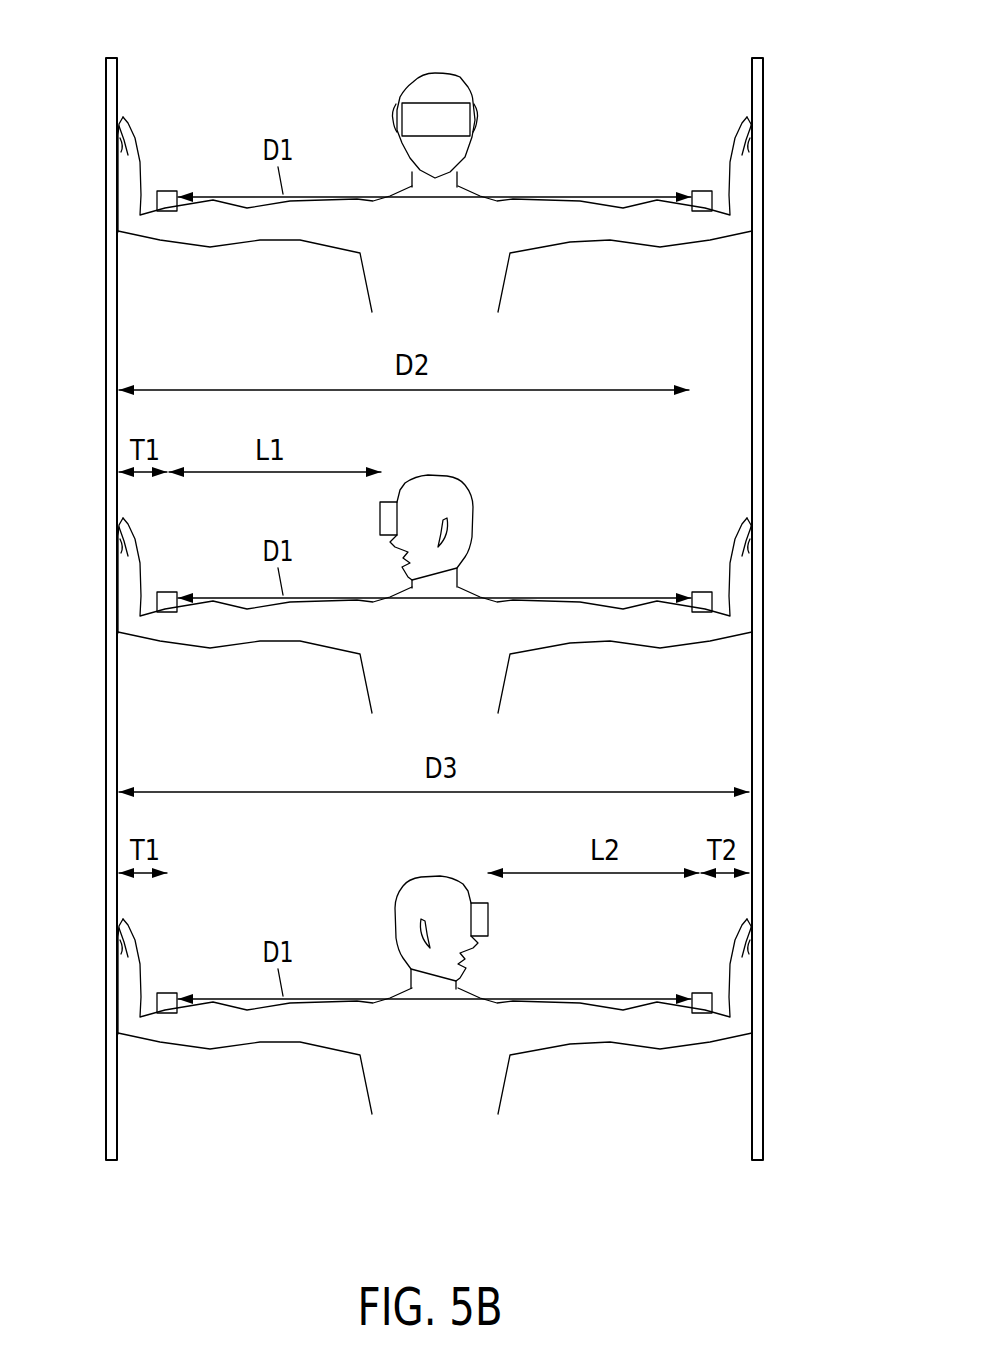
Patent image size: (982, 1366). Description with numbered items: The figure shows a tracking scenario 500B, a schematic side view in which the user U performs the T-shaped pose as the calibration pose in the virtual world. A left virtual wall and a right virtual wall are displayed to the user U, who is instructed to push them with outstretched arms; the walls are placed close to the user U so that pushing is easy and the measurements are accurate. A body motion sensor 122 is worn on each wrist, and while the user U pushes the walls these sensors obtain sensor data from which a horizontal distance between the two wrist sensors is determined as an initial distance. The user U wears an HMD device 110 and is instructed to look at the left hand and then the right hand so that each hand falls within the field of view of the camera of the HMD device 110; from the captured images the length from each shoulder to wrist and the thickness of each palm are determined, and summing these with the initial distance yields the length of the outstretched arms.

The HMD device 110 is at (413, 103).
The body motion sensor 122 is at (168, 190).
The user U is at (457, 80).
The tracking scenario 500B is at (822, 1245).